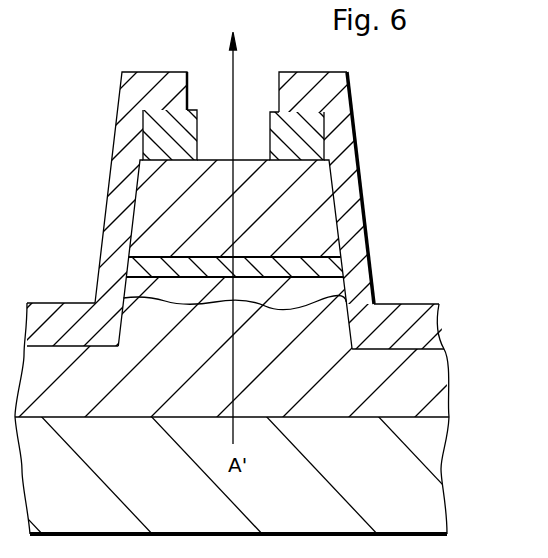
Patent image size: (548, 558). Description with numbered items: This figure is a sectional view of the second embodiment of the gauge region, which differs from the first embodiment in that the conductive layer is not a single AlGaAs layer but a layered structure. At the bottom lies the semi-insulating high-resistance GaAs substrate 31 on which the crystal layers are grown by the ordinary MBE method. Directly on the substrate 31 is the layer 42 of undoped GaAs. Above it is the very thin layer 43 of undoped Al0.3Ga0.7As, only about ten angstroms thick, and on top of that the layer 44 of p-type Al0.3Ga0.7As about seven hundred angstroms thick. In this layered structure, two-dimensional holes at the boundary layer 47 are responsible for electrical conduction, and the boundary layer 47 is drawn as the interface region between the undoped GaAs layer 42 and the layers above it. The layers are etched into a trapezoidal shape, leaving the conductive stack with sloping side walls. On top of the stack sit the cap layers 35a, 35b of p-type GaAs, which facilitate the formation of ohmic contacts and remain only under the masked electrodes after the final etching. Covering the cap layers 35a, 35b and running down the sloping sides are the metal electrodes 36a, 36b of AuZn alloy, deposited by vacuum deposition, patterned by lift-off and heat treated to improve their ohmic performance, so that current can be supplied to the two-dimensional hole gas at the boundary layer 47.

The semi-insulating high-resistance GaAs substrate 31 is at (441, 469).
The layer of undoped GaAs 42 is at (449, 388).
The boundary layer 47 is at (332, 291).
The layer of undoped AlGaAs 43 is at (341, 268).
The layer of p-type AlGaAs 44 is at (327, 213).
The metal electrode 36a is at (115, 118).
The metal electrode 36b is at (351, 90).
The cap layer 35a is at (147, 150).
The cap layer 35b is at (319, 147).